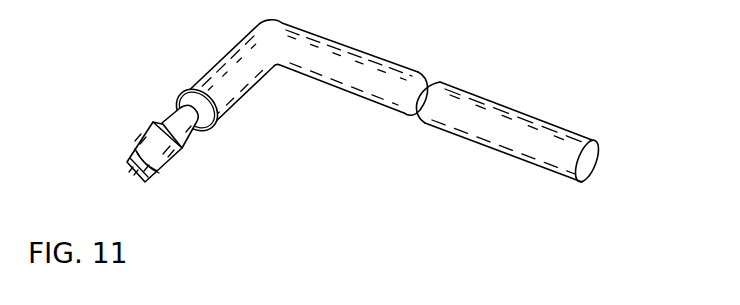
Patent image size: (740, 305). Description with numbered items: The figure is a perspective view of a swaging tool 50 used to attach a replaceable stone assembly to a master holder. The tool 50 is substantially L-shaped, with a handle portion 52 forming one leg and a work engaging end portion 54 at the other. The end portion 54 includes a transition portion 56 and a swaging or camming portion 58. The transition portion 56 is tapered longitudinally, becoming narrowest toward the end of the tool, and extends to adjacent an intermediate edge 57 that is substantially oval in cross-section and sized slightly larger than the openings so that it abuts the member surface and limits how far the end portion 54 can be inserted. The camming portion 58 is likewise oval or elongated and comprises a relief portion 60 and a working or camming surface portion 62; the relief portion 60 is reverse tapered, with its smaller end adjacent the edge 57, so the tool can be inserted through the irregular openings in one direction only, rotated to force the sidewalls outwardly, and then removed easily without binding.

The swaging tool 50 is at (515, 65).
The handle portion 52 is at (562, 150).
The work engaging end portion 54 is at (156, 113).
The transition portion 56 is at (197, 137).
The intermediate edge 57 is at (153, 127).
The swaging or camming portion 58 is at (133, 160).
The relief portion 60 is at (174, 158).
The working or camming surface portion 62 is at (155, 173).